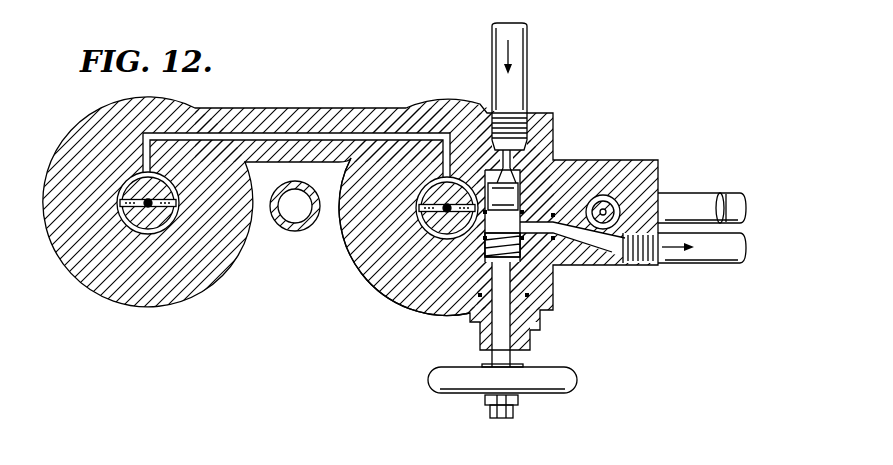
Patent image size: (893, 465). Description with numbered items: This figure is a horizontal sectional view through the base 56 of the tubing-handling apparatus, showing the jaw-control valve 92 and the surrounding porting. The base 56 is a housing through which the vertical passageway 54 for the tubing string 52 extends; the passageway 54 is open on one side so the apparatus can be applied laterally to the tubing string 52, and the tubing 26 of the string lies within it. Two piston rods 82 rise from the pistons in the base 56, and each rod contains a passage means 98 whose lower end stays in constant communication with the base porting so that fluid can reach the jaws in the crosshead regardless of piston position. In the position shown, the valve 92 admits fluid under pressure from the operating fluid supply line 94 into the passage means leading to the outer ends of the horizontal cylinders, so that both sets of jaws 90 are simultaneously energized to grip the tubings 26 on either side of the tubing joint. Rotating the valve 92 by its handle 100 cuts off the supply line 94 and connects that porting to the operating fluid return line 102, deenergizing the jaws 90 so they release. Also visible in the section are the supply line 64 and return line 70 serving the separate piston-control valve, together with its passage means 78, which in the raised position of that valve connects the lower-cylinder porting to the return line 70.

The tubing 26 is at (288, 230).
The tubing string 52 is at (296, 238).
The passageway 54 is at (340, 249).
The base 56 is at (311, 112).
The supply line 64 is at (735, 198).
The operating fluid return line 70 is at (694, 200).
The passage means 78 is at (630, 168).
The piston rods 82 is at (147, 210).
The jaws 90 is at (188, 138).
The valve 92 is at (556, 165).
The operating fluid supply line 94 is at (528, 43).
The passage means 98 is at (145, 207).
The handle 100 is at (463, 393).
The operating fluid return line 102 is at (703, 262).